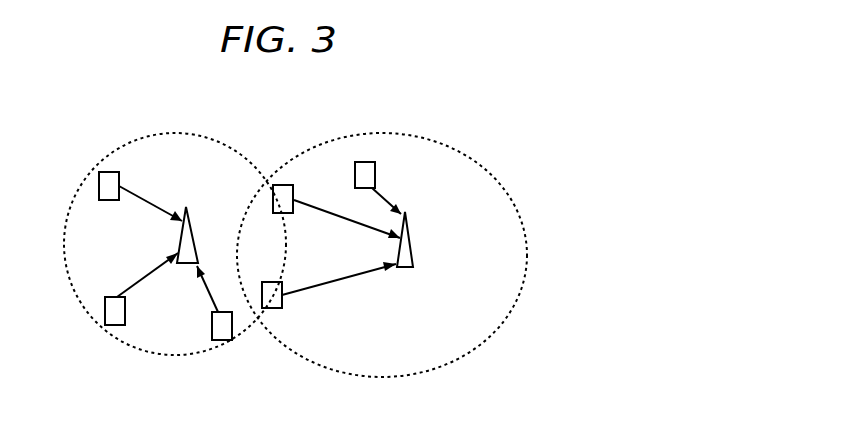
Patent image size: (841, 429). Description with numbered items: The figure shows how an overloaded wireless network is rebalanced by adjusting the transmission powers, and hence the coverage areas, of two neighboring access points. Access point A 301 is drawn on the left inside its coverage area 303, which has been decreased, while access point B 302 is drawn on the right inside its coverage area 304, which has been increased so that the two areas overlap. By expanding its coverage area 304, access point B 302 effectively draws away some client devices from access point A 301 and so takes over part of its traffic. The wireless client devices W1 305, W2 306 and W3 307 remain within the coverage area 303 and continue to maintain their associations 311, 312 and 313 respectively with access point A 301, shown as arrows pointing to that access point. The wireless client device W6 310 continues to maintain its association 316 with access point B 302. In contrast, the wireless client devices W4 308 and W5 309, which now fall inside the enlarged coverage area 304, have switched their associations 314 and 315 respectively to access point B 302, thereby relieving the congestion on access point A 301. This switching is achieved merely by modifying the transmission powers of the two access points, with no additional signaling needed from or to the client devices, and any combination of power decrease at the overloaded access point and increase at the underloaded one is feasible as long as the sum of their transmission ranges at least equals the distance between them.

The access point A 301 is at (189, 214).
The access point B 302 is at (412, 249).
The coverage area of access point A 303 is at (152, 134).
The coverage area of access point B 304 is at (468, 350).
The wireless client device W1 305 is at (100, 174).
The wireless client device W2 306 is at (106, 322).
The wireless client device W3 307 is at (222, 340).
The wireless client device W4 308 is at (283, 303).
The wireless client device W5 309 is at (283, 185).
The wireless client device W6 310 is at (375, 176).
The association of W1 with access point A 311 is at (135, 196).
The association of W2 with access point A 312 is at (140, 276).
The association of W3 with access point A 313 is at (204, 287).
The association of W4 with access point B 314 is at (330, 280).
The association of W5 with access point B 315 is at (364, 227).
The association of W6 with access point B 316 is at (387, 204).